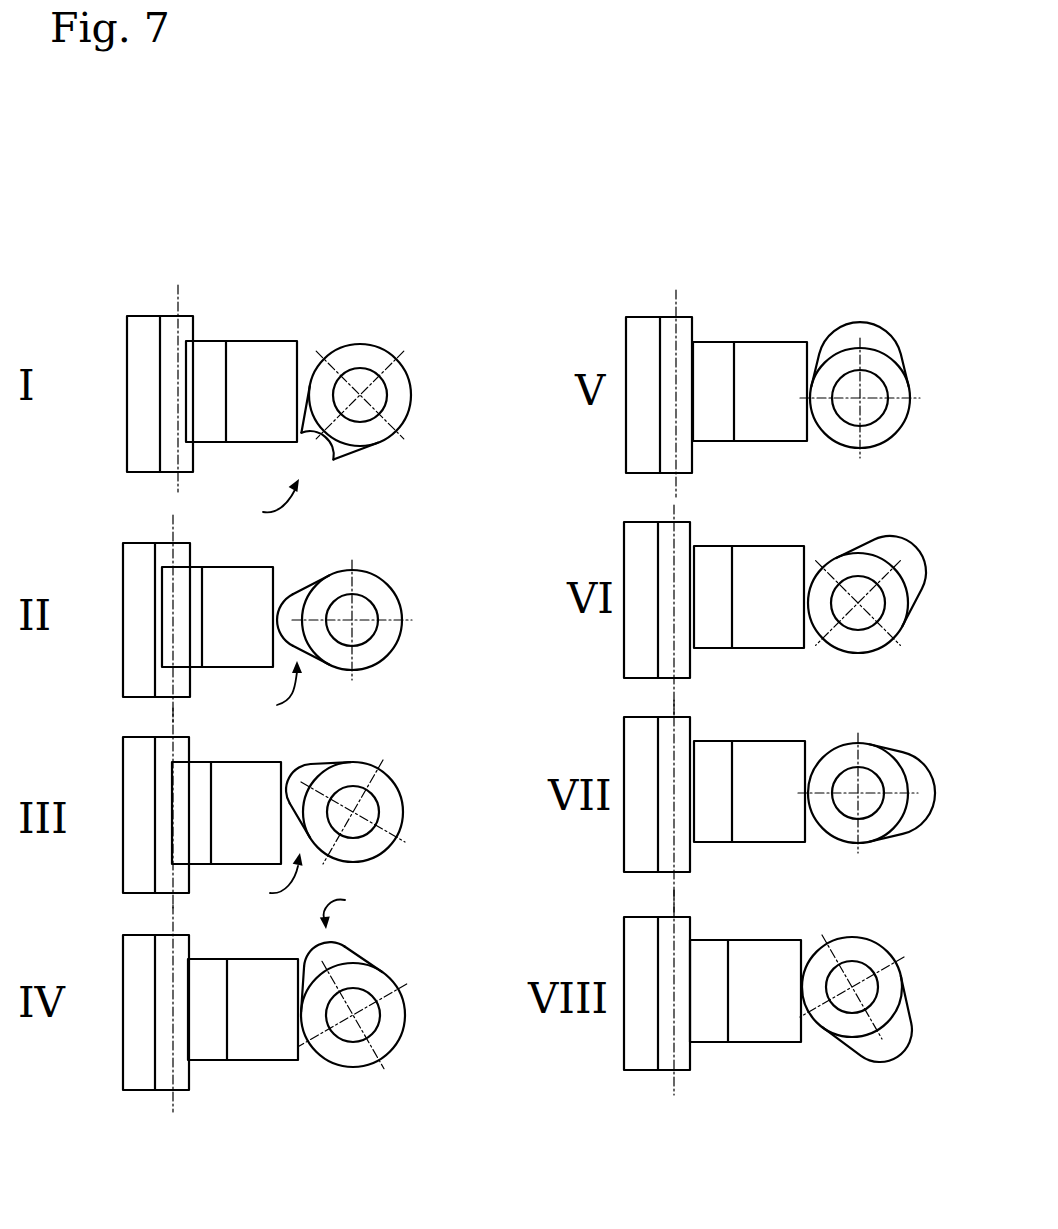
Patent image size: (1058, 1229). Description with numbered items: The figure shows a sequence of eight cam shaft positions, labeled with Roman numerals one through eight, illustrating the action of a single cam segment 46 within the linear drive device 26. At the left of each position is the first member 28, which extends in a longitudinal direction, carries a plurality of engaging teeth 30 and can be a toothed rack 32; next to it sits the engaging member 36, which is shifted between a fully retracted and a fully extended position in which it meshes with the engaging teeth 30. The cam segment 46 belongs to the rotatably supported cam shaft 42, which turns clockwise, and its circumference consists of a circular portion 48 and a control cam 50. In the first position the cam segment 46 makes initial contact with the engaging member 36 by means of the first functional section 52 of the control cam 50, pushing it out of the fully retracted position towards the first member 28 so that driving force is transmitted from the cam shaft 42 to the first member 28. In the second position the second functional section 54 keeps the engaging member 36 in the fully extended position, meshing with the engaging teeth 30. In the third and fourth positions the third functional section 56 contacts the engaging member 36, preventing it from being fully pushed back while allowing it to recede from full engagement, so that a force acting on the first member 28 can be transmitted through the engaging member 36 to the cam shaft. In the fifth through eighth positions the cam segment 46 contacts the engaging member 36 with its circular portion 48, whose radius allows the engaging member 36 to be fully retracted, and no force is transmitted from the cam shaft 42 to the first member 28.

The linear drive device 26 is at (457, 288).
The first member 28 is at (132, 374).
The engaging teeth 30 is at (165, 415).
The toothed rack 32 is at (137, 455).
The engaging member 36 is at (251, 333).
The cam shaft 42 is at (487, 373).
The cam segment 46 is at (390, 367).
The circular portion 48 is at (405, 398).
The control cam 50 is at (302, 704).
The first functional section 52 is at (297, 418).
The second functional section 54 is at (295, 457).
The third functional section 56 is at (347, 460).